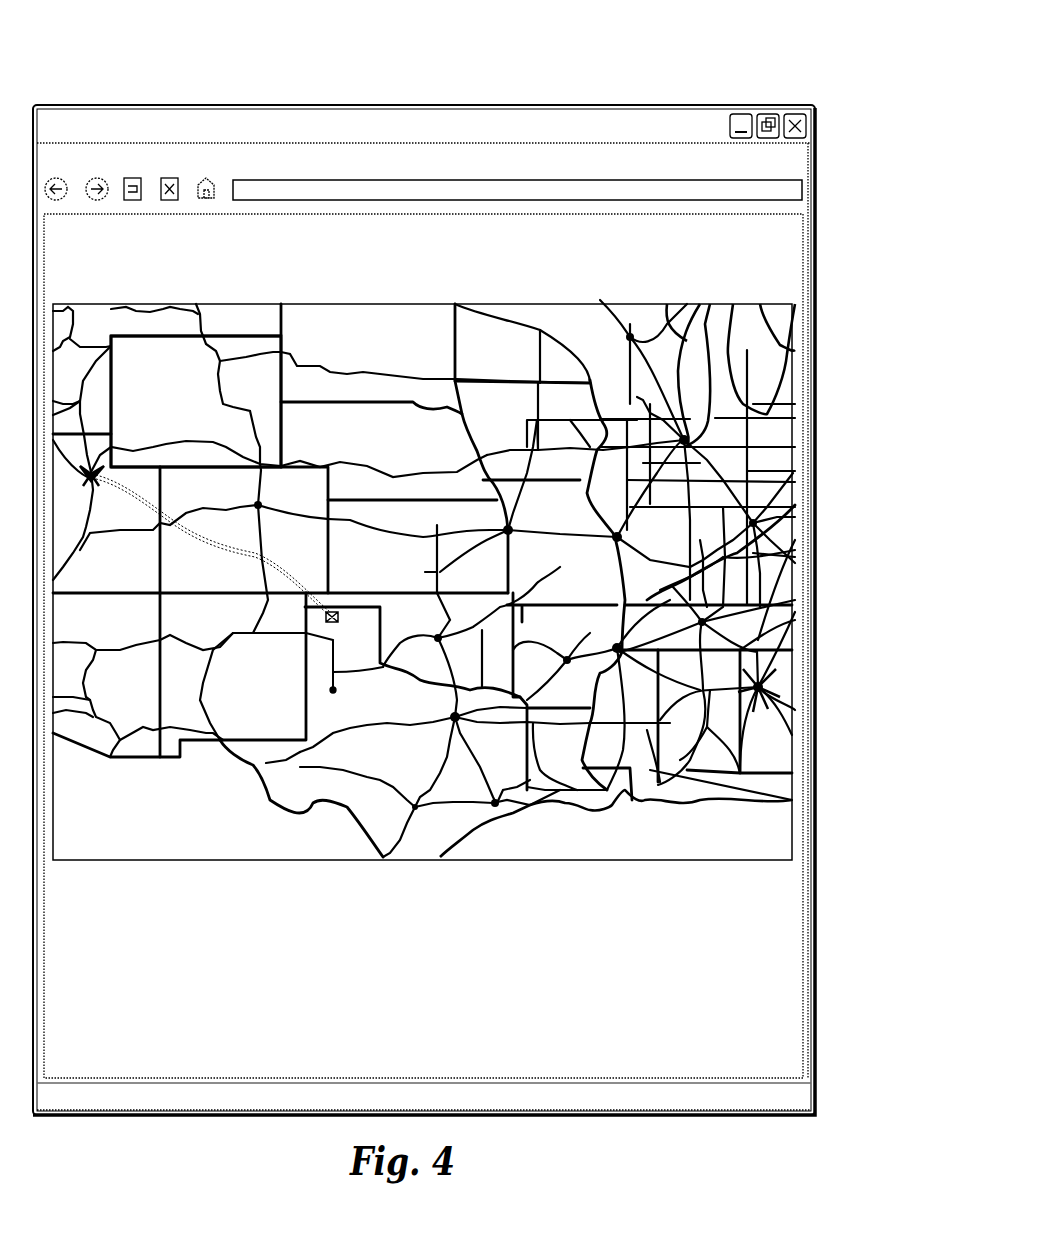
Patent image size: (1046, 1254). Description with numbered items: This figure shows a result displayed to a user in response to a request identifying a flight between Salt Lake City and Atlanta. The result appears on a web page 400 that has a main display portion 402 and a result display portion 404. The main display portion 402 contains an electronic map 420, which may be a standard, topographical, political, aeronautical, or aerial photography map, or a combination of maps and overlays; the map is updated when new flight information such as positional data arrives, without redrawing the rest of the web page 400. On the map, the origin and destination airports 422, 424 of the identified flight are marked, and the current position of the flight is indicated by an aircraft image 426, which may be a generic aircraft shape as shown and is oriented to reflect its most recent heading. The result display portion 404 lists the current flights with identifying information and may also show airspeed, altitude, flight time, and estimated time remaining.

The web page 400 is at (613, 73).
The main display portion 402 is at (831, 377).
The result display portion 404 is at (829, 899).
The electronic map 420 is at (168, 359).
The airport 422 is at (82, 466).
The airport 424 is at (758, 688).
The aircraft image 426 is at (328, 628).